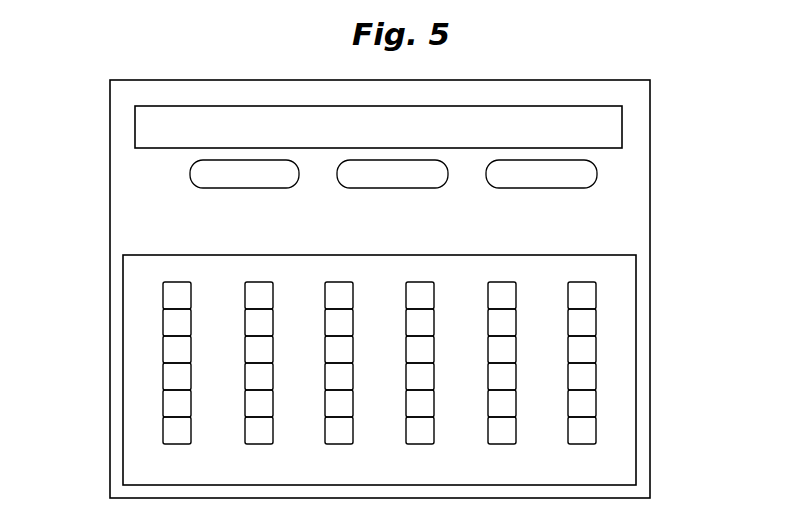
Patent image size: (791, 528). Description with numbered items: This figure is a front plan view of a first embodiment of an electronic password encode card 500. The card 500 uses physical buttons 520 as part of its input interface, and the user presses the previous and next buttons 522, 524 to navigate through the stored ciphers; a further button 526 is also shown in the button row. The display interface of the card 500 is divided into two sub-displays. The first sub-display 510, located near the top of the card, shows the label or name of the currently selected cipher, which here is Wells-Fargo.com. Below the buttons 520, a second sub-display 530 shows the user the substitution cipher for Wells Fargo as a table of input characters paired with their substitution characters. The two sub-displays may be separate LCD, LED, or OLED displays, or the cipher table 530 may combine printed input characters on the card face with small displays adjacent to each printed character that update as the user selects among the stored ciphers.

The electronic encode card 500 is at (593, 80).
The first sub-display 510 is at (135, 133).
The physical buttons 520 is at (456, 176).
The previous button 522 is at (258, 190).
The next button 524 is at (406, 190).
The new button 526 is at (554, 190).
The second sub-display 530 is at (123, 309).